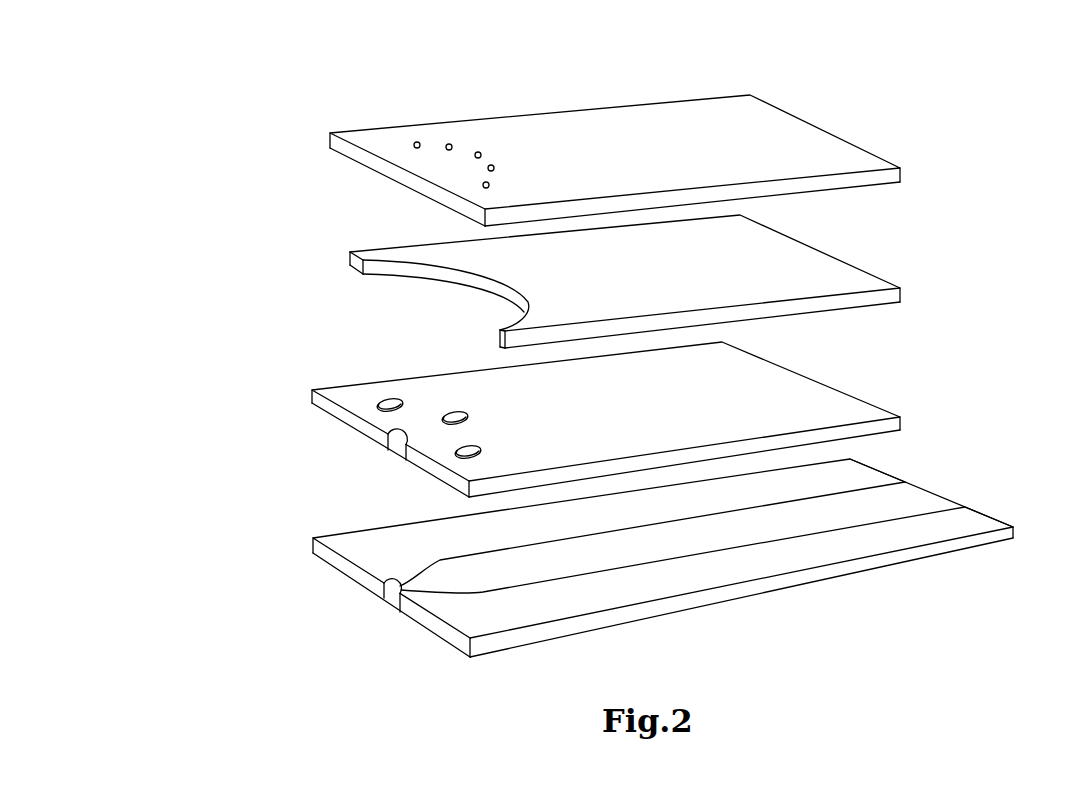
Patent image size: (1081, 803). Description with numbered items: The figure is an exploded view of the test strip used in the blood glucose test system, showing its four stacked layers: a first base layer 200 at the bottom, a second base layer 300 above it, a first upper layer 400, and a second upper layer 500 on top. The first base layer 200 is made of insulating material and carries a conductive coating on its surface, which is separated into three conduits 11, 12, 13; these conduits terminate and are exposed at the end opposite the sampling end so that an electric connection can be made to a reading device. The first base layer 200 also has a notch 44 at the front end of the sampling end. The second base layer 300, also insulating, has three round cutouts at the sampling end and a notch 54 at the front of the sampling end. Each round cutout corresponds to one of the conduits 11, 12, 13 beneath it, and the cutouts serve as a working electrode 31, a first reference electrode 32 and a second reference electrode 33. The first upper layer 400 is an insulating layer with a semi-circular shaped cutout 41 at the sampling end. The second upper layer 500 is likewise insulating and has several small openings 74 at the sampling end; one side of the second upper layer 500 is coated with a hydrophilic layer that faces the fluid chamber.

The second upper layer 500 is at (551, 160).
The small openings 74 is at (486, 181).
The first upper layer 400 is at (551, 281).
The semi-circular shaped cutout 41 is at (485, 293).
The second base layer 300 is at (551, 419).
The working electrode 31 is at (410, 400).
The first reference electrode 32 is at (470, 412).
The second reference electrode 33 is at (490, 448).
The notch 54 is at (392, 453).
The first base layer 200 is at (608, 558).
The conduit 11 is at (872, 463).
The conduit 12 is at (925, 488).
The conduit 13 is at (983, 513).
The notch 44 is at (392, 607).